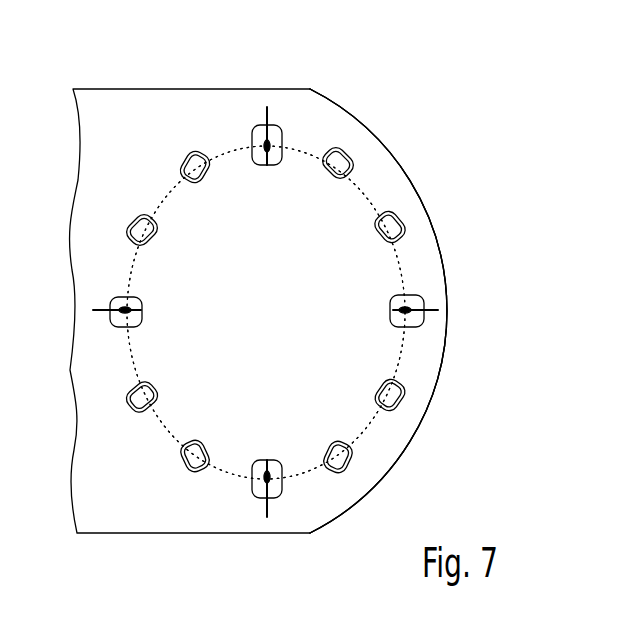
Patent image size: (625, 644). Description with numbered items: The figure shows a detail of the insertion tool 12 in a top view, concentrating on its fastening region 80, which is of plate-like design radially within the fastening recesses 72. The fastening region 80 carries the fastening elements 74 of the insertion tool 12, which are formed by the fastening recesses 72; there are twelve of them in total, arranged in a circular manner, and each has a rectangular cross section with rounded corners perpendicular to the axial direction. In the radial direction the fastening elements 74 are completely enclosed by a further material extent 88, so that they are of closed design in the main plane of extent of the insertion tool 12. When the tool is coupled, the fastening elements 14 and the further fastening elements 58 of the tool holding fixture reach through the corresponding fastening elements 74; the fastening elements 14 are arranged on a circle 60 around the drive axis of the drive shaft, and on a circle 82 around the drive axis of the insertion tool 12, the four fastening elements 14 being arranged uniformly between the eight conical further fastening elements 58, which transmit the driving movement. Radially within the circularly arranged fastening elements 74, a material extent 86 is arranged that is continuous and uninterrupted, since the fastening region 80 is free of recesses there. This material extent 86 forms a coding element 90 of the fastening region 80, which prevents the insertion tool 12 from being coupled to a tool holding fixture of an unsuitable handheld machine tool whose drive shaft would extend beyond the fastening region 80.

The insertion tool 12 is at (430, 421).
The fastening element 14 is at (279, 137).
The further fastening element 58 is at (132, 405).
The circle 60 is at (266, 258).
The circle 82 is at (223, 152).
The fastening recess 72 is at (391, 172).
The fastening element 74 is at (398, 211).
The further material extent 88 is at (422, 240).
The fastening region 80 is at (428, 362).
The material extent 86 is at (417, 291).
The coding element 90 is at (297, 302).